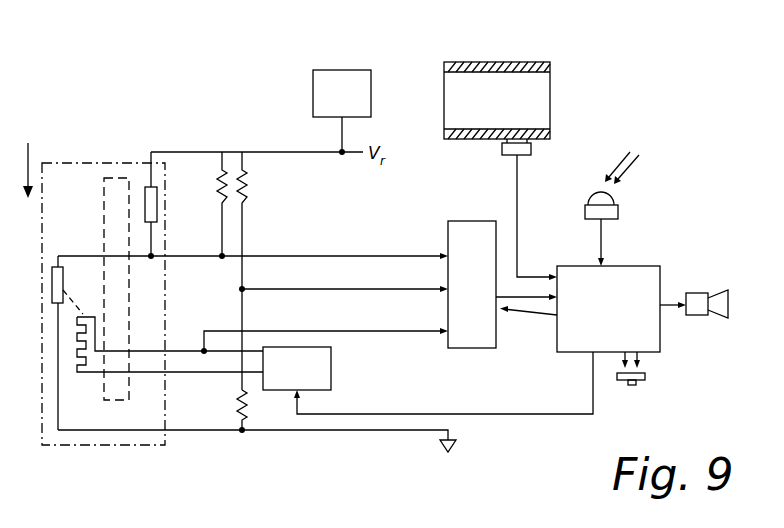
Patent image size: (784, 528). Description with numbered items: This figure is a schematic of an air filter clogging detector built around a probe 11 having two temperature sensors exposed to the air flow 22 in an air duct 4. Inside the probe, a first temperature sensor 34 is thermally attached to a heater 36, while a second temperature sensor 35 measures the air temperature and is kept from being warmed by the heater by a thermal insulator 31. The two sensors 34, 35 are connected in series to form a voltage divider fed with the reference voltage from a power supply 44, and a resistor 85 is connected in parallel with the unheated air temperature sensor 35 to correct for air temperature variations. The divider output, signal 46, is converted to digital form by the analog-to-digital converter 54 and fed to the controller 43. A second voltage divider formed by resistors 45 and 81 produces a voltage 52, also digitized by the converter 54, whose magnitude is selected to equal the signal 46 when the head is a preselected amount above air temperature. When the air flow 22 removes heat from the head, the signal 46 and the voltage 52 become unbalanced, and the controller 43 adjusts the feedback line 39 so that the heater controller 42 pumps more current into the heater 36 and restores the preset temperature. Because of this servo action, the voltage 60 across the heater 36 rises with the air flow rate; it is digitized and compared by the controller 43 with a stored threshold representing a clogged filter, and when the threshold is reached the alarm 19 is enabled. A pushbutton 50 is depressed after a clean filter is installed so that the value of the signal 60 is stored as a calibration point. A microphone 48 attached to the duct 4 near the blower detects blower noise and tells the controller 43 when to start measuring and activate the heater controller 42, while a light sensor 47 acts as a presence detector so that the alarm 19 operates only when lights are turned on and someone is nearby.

The air duct 4 is at (540, 77).
The probe 11 is at (128, 163).
The alarm 19 is at (700, 292).
The air flow 22 is at (41, 165).
The thermal insulator 31 is at (121, 186).
The first temperature sensor 34 is at (52, 282).
The second temperature sensor 35 is at (158, 206).
The heater 36 is at (77, 322).
The feedback line 39 is at (578, 414).
The heater controller 42 is at (324, 361).
The controller 43 is at (640, 276).
The power supply 44 is at (320, 101).
The resistor 45 is at (245, 196).
The signal 46 is at (355, 256).
The light sensor 47 is at (610, 215).
The microphone 48 is at (502, 150).
The pushbutton 50 is at (645, 378).
The voltage 52 is at (280, 289).
The analog-to-digital converter 54 is at (470, 229).
The voltage across heater 60 is at (287, 331).
The resistor 81 is at (230, 407).
The resistor 85 is at (217, 180).